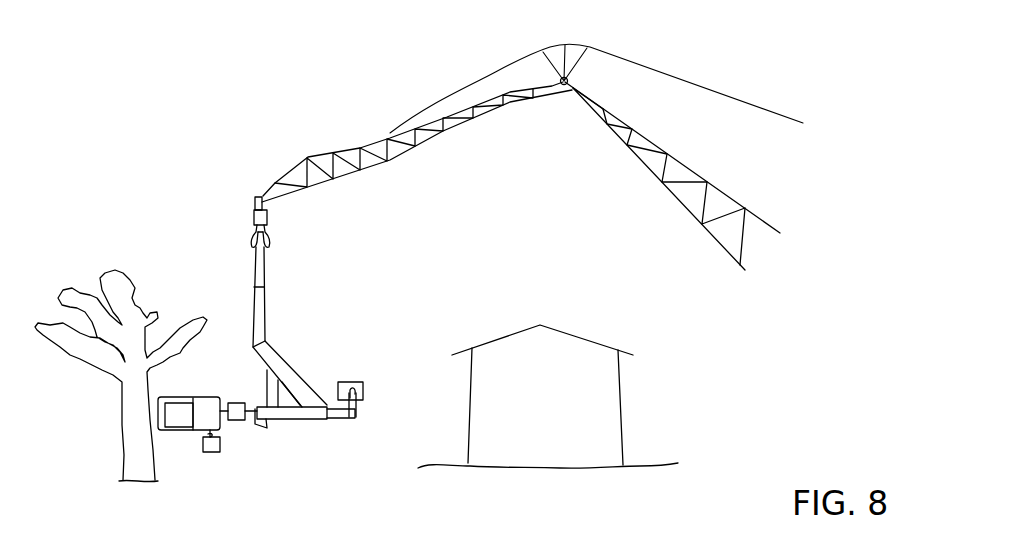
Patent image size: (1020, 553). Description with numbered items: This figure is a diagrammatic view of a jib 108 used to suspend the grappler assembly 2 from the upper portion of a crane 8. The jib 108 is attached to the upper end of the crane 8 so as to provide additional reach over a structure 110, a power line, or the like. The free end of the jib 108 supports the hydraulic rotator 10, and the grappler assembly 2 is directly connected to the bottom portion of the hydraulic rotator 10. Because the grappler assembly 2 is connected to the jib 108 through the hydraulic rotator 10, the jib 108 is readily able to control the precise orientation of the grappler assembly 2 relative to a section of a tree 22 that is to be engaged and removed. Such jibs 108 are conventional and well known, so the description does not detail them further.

The grappler assembly 2 is at (316, 318).
The crane 8 is at (695, 148).
The hydraulic rotator 10 is at (242, 205).
The tree 22 is at (106, 413).
The jib 108 is at (377, 140).
The structure 110 is at (605, 395).